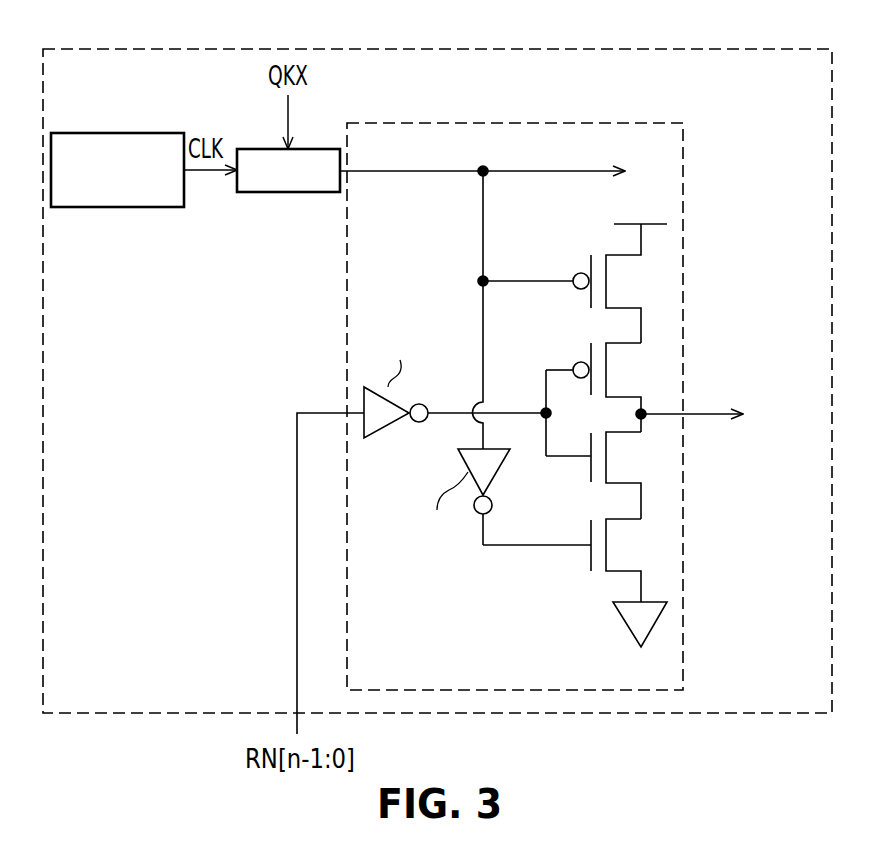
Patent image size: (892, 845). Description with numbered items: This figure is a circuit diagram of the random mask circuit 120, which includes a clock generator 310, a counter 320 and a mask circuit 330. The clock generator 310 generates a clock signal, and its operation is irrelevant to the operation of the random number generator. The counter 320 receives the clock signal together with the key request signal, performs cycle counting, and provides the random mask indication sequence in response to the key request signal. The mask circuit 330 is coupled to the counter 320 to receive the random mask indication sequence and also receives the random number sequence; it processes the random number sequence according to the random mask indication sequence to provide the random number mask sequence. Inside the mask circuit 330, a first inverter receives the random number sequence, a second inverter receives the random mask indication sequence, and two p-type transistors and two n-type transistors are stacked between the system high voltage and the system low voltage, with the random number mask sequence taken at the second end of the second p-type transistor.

The random mask circuit 120 is at (710, 46).
The clock generator 310 is at (80, 131).
The counter 320 is at (316, 147).
The mask circuit 330 is at (598, 121).